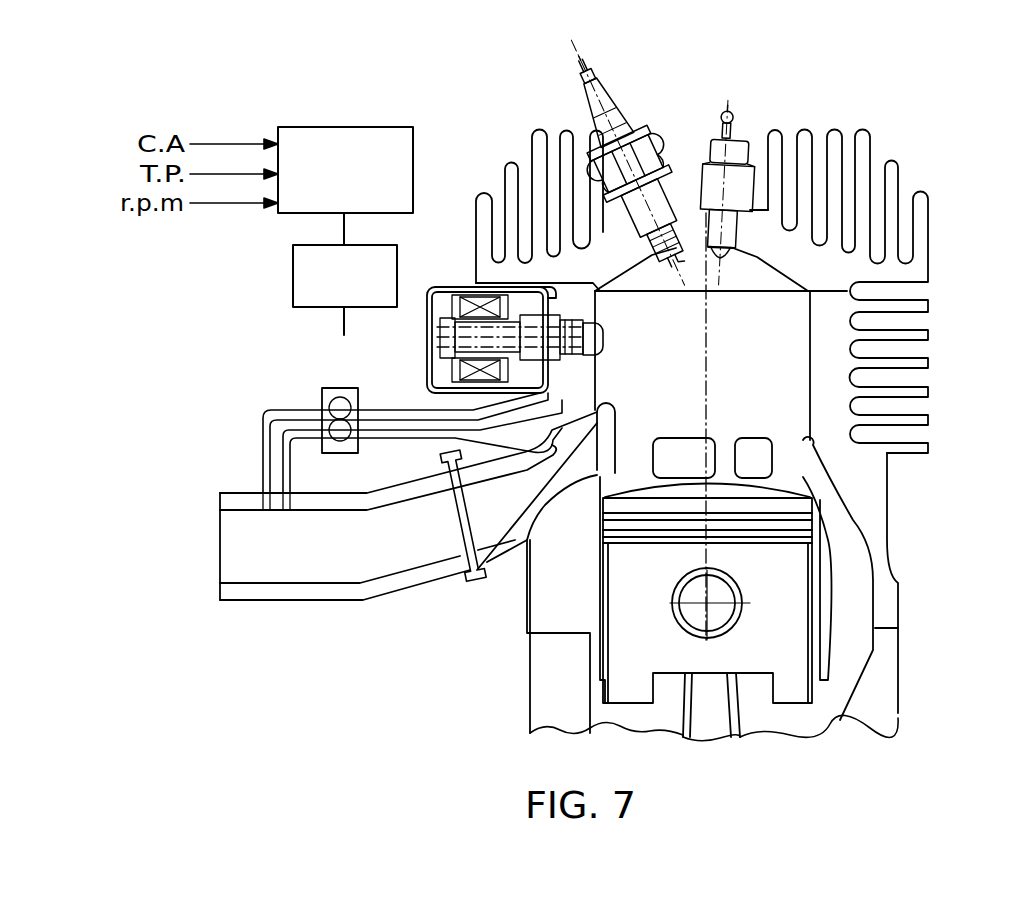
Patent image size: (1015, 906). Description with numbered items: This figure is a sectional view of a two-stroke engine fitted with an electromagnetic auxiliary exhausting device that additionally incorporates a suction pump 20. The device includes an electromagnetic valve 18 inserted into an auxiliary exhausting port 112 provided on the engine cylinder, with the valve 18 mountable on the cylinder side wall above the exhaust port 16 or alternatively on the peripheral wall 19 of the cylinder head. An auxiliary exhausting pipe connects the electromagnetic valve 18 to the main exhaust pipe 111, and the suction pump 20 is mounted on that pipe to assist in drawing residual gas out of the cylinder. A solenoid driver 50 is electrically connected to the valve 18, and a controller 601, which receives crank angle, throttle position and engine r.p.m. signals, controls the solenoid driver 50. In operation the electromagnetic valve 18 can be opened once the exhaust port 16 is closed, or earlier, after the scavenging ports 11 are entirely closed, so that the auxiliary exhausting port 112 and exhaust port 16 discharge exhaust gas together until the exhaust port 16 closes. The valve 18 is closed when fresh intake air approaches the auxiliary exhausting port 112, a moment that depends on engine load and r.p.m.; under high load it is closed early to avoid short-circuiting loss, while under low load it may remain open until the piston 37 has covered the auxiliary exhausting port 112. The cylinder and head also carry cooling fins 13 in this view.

The controller 601 is at (371, 135).
The solenoid driver 50 is at (301, 277).
The suction pump 20 is at (338, 388).
The electromagnetic valve 18 is at (444, 290).
The auxiliary exhausting port 112 is at (605, 335).
The main exhaust pipe 111 is at (287, 553).
The exhaust port 16 is at (500, 570).
The peripheral wall of the cylinder head 19 is at (577, 265).
The cylinder cooling fins 13 is at (830, 338).
The scavenging ports 11 is at (698, 465).
The piston 37 is at (787, 568).